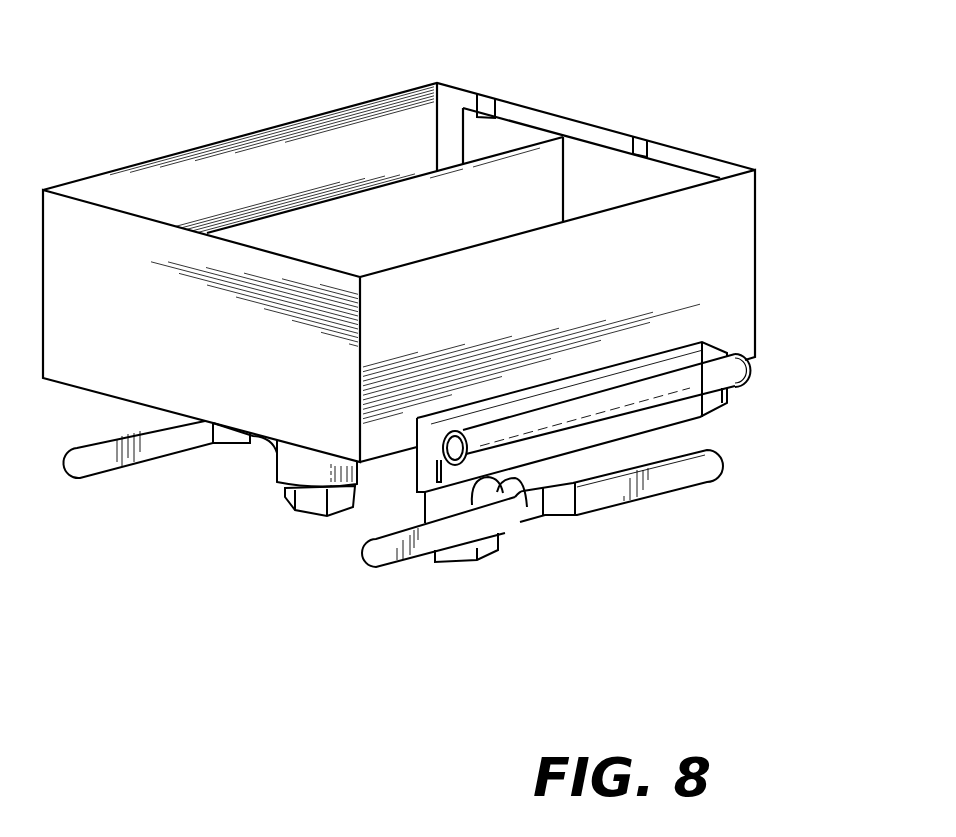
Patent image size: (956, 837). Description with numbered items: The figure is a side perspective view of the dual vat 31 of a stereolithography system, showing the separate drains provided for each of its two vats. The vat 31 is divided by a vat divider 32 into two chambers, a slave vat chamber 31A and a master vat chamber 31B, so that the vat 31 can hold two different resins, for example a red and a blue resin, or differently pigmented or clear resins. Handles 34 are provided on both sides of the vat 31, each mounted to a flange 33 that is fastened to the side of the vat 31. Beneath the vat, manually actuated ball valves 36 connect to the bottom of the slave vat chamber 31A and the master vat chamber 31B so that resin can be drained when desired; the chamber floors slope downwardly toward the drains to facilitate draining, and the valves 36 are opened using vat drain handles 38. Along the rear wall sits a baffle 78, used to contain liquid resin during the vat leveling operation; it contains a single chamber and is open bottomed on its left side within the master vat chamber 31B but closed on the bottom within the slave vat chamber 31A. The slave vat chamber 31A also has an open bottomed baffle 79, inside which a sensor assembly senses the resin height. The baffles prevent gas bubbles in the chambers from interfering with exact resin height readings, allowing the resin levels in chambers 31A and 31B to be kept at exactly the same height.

The dual vat 31 is at (104, 342).
The slave vat chamber 31A is at (392, 257).
The master vat chamber 31B is at (270, 182).
The vat divider 32 is at (413, 213).
The flanges 33 is at (417, 462).
The handles 34 is at (717, 370).
The manually actuated ball valves 36 is at (313, 513).
The vat drain handles 38 is at (147, 460).
The baffle 78 is at (532, 118).
The open bottomed baffle 79 is at (687, 162).